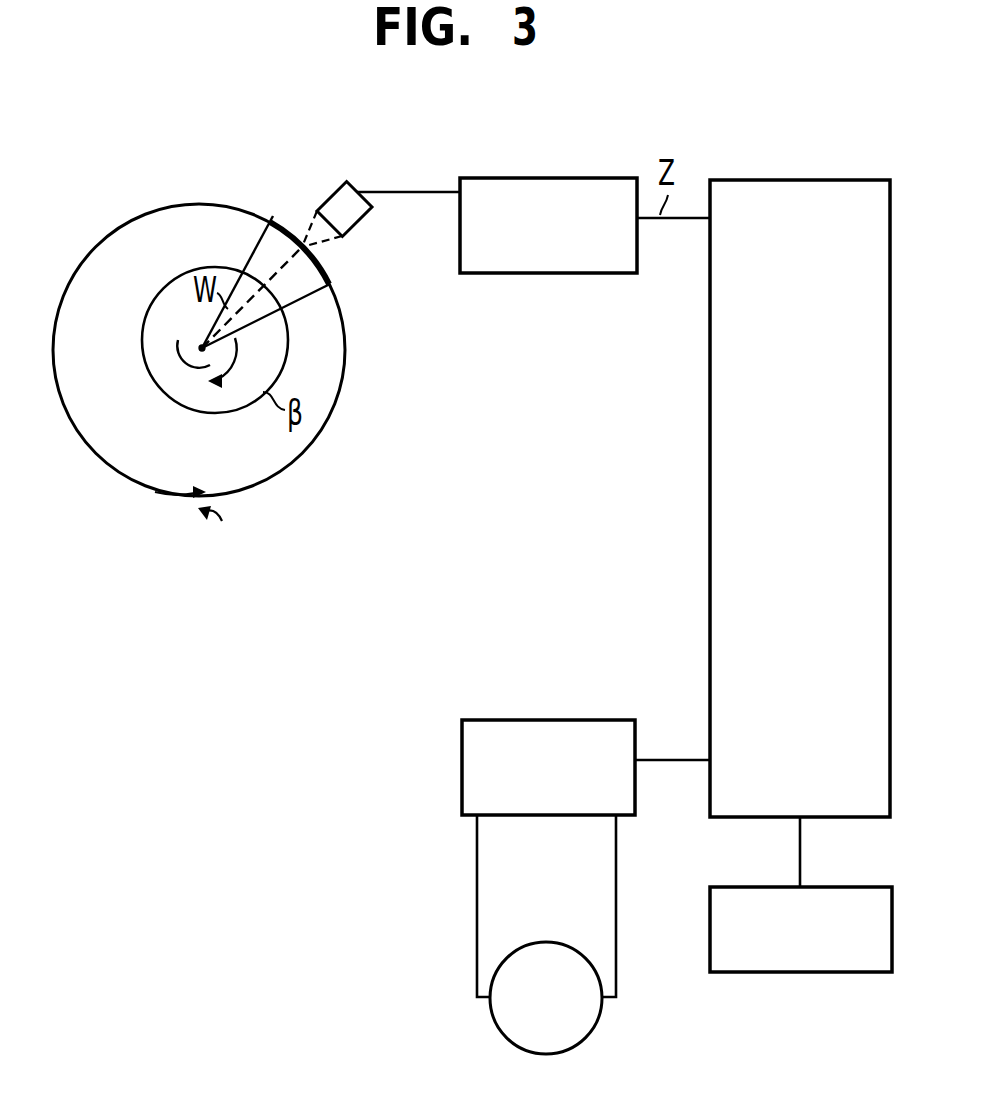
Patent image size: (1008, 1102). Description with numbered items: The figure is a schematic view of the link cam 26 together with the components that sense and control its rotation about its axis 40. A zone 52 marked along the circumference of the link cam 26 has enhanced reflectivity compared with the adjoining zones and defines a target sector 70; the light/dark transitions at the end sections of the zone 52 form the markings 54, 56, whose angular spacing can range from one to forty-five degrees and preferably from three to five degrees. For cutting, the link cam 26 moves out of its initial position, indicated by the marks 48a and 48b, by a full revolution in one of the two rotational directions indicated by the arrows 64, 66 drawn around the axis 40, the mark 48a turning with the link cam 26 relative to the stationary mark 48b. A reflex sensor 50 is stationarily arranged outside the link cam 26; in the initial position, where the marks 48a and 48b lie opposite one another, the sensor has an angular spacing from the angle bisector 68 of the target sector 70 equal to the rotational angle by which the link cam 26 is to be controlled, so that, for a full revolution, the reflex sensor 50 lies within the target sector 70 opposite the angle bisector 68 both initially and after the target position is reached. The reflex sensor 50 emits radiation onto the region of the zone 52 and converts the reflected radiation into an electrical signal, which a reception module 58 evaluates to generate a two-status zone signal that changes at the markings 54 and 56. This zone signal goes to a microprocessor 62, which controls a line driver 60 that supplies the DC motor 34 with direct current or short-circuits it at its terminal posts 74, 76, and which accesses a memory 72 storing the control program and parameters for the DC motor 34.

The link cam 26 is at (110, 247).
The DC motor 34 is at (558, 1037).
The axis of rotation 40 is at (201, 338).
The mark 48a is at (158, 492).
The stationary mark 48b is at (220, 533).
The reflex sensor 50 is at (363, 191).
The marked zone 52 is at (278, 240).
The marking 54 is at (273, 218).
The marking 56 is at (322, 265).
The reception module 58 is at (477, 178).
The line driver 60 is at (512, 718).
The microprocessor 62 is at (802, 182).
The arrow 64 is at (230, 381).
The arrow 66 is at (180, 364).
The angle bisector 68 is at (280, 272).
The target sector 70 is at (258, 286).
The memory 72 is at (787, 972).
The terminal post 74 is at (607, 1007).
The terminal post 76 is at (490, 1003).